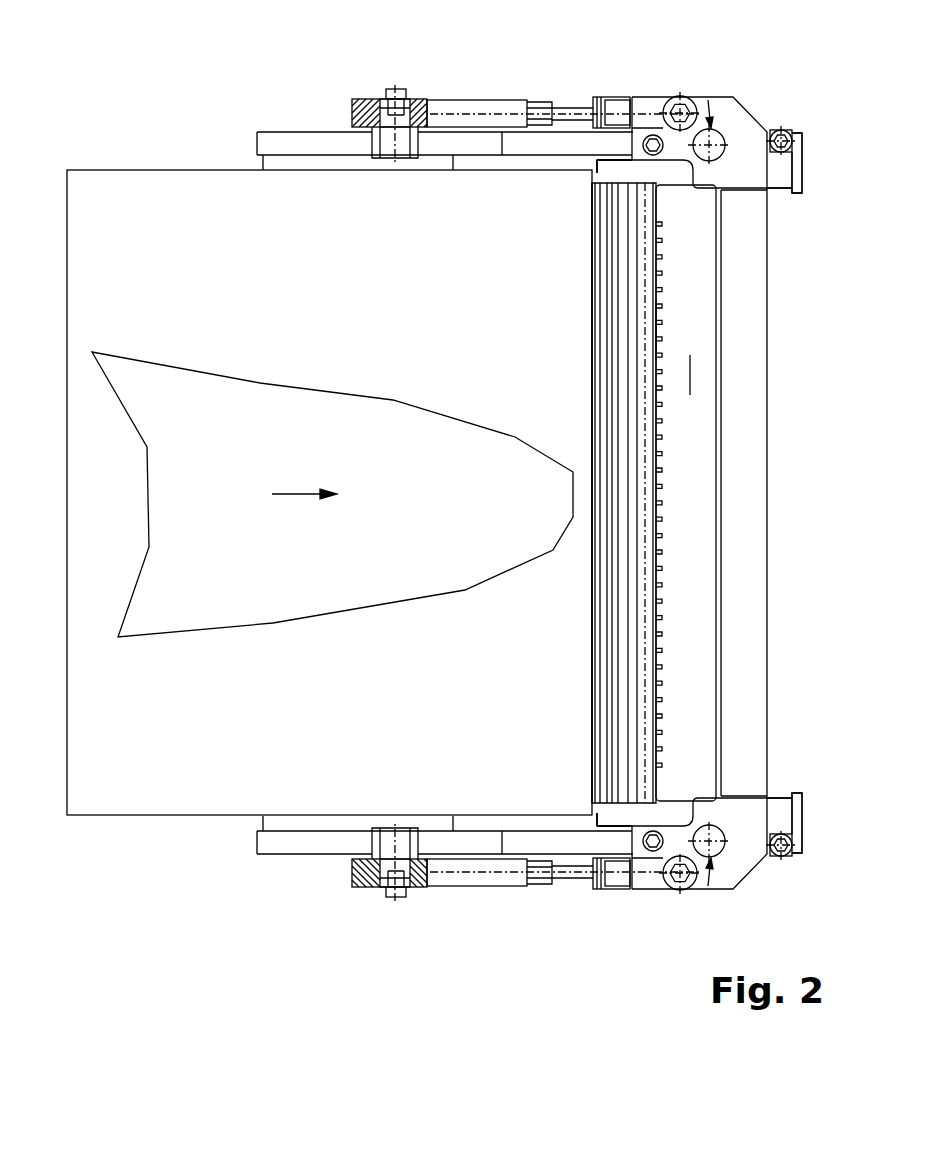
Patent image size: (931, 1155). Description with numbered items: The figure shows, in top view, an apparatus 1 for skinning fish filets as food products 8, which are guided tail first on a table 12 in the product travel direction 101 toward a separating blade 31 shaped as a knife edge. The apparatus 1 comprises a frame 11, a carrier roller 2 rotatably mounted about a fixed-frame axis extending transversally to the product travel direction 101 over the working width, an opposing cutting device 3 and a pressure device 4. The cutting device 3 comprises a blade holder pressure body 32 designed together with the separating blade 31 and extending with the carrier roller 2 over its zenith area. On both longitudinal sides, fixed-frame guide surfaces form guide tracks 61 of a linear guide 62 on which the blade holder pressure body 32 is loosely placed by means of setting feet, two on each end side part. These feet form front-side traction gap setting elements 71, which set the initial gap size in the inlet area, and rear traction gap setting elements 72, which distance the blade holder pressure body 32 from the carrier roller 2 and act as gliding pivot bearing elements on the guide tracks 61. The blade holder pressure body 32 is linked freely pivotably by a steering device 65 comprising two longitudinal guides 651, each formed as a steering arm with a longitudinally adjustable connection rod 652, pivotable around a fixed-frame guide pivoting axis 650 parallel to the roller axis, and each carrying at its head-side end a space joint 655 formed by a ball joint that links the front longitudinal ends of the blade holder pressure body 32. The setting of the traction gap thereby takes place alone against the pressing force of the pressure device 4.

The apparatus 1 is at (181, 95).
The carrier roller 2 is at (606, 274).
The opposing cutting device 3 is at (636, 614).
The pressure device 4 is at (684, 494).
The food products 8 is at (220, 448).
The frame 11 is at (303, 142).
The table 12 is at (340, 297).
The separating blade 31 is at (657, 330).
The blade holder pressure body 32 is at (700, 375).
The guide tracks 61 is at (613, 157).
The linear guide 62 is at (613, 157).
The steering device 65 is at (563, 493).
The front-side traction gap setting elements 71 is at (652, 135).
The rear traction gap setting elements 72 is at (780, 133).
The product travel direction 101 is at (294, 494).
The guide pivoting axis 650 is at (368, 96).
The longitudinal guides 651 is at (508, 110).
The connection rods 652 is at (572, 110).
The space joint 655 is at (687, 110).